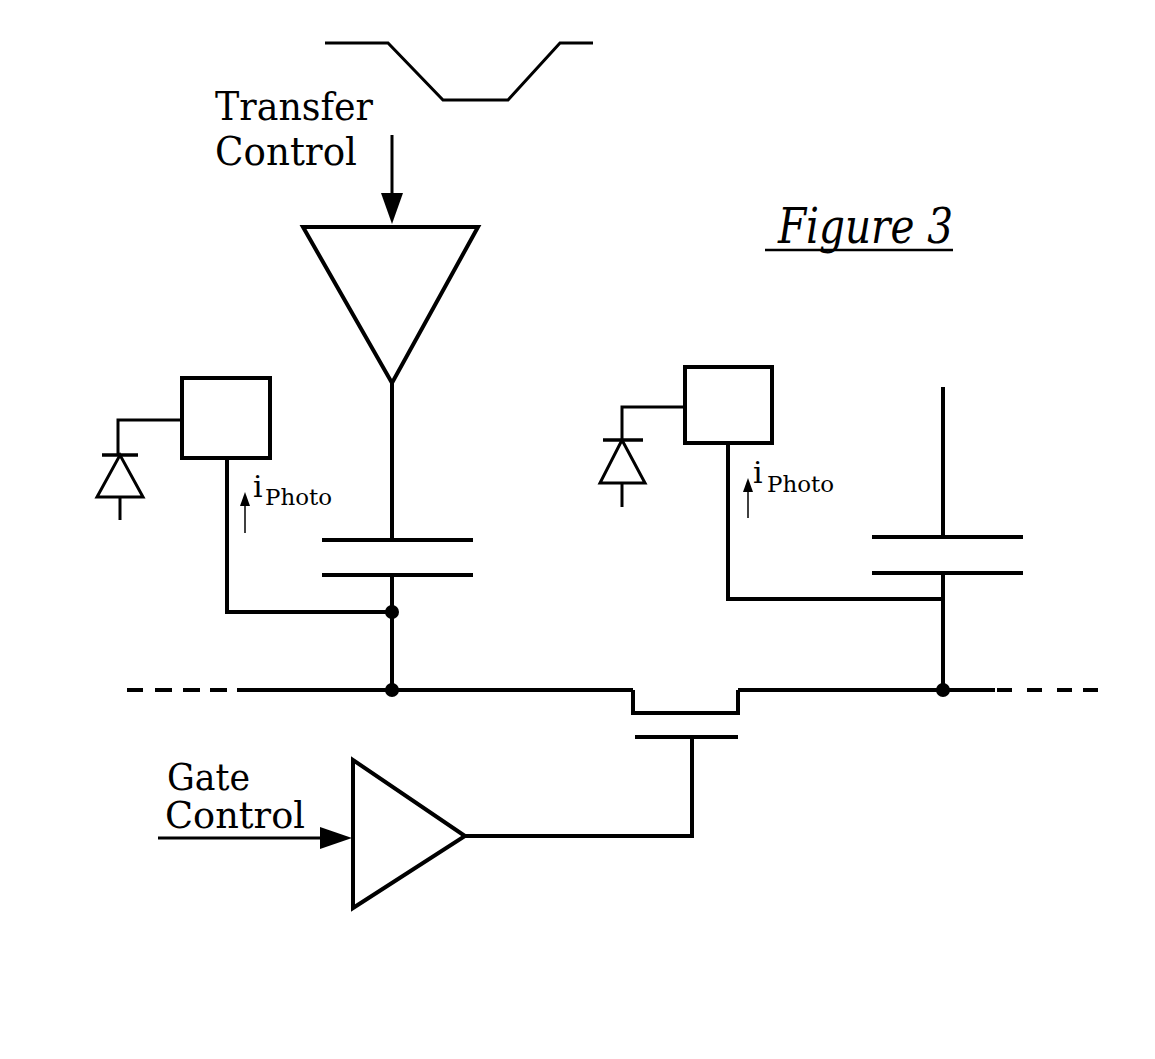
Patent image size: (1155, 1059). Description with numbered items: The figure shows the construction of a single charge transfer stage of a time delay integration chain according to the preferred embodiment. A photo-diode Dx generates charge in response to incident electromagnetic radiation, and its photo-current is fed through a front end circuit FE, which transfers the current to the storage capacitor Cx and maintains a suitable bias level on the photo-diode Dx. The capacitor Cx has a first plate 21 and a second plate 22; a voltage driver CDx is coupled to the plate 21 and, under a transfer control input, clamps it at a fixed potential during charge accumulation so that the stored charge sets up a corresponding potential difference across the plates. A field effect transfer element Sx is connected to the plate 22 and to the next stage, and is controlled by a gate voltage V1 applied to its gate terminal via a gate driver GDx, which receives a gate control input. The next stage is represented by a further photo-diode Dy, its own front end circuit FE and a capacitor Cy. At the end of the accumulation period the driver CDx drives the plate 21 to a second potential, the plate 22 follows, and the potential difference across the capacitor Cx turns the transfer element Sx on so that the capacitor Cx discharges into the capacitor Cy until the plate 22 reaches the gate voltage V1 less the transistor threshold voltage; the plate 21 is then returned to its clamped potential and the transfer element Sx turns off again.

The capacitor plate 21 is at (440, 538).
The capacitor plate 22 is at (435, 577).
The capacitor Cx is at (439, 558).
The capacitor Cy is at (989, 559).
The field effect transfer element Sx is at (720, 724).
The voltage driver CDx is at (390, 305).
The gate driver GDx is at (409, 834).
The front end circuit FE is at (477, 412).
The photo-diode Dx is at (133, 502).
The photo-diode Dy is at (642, 488).
The gate voltage V1 is at (594, 814).